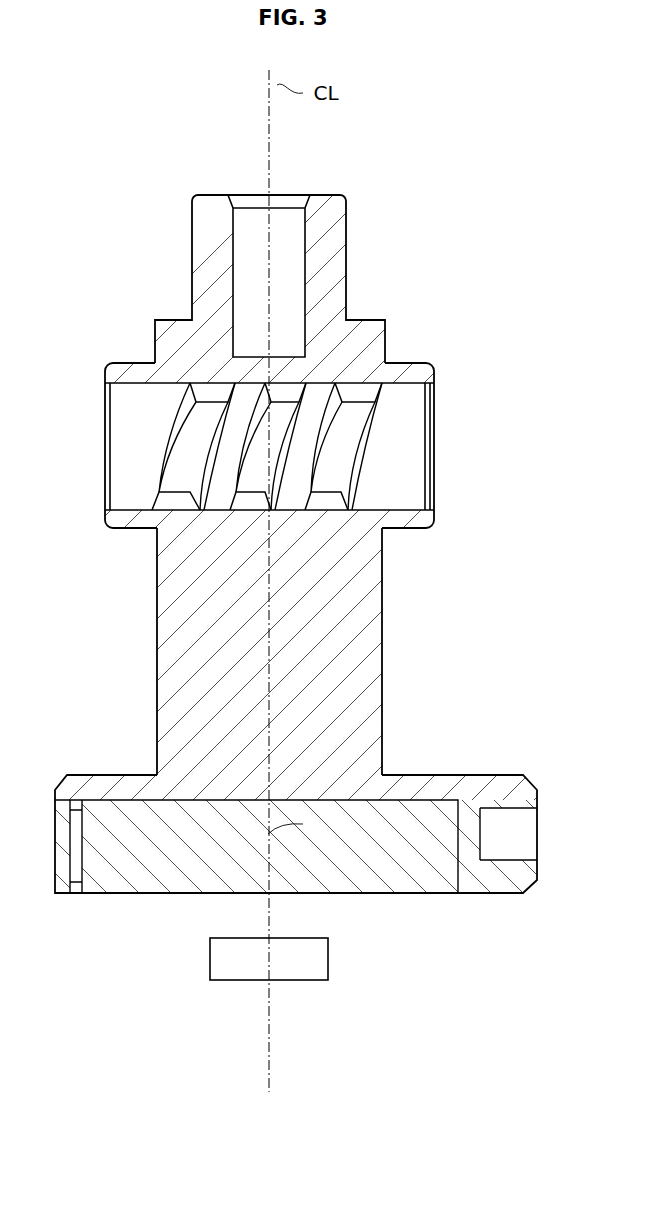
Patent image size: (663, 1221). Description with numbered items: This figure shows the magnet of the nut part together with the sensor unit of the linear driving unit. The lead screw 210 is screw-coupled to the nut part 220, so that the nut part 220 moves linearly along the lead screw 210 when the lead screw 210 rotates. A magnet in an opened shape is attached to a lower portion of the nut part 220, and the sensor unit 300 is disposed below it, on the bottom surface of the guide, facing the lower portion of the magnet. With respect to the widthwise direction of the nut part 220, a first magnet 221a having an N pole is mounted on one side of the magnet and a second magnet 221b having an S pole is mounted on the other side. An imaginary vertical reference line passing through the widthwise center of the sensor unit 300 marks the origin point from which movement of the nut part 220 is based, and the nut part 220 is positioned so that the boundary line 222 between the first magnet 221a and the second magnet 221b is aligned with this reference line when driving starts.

The nut part 220 is at (325, 193).
The lead screw 210 is at (410, 462).
The boundary line 222 is at (383, 745).
The first magnet 221a is at (122, 868).
The second magnet 221b is at (378, 867).
The sensor unit 300 is at (312, 987).